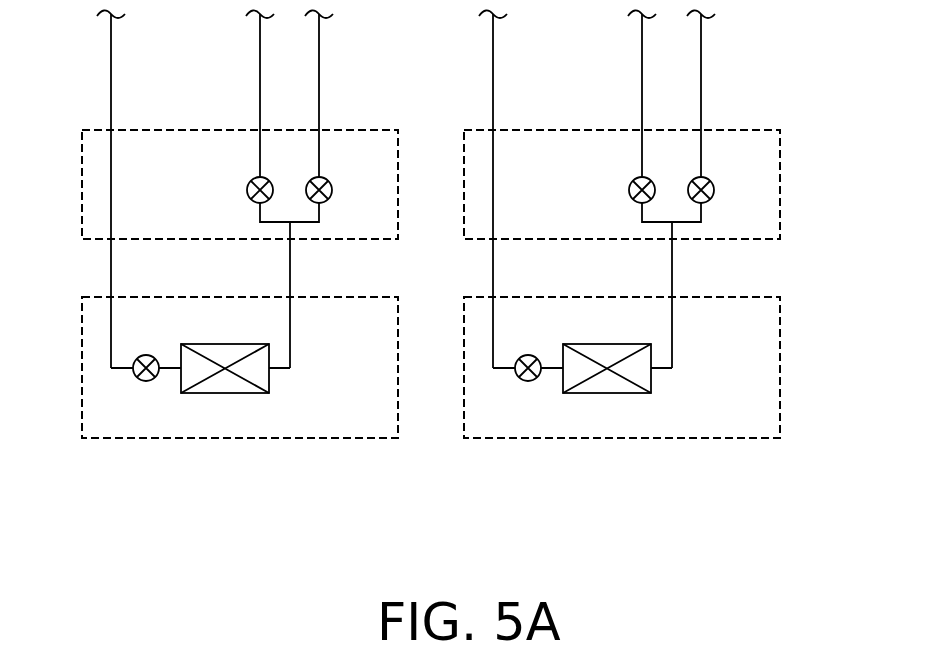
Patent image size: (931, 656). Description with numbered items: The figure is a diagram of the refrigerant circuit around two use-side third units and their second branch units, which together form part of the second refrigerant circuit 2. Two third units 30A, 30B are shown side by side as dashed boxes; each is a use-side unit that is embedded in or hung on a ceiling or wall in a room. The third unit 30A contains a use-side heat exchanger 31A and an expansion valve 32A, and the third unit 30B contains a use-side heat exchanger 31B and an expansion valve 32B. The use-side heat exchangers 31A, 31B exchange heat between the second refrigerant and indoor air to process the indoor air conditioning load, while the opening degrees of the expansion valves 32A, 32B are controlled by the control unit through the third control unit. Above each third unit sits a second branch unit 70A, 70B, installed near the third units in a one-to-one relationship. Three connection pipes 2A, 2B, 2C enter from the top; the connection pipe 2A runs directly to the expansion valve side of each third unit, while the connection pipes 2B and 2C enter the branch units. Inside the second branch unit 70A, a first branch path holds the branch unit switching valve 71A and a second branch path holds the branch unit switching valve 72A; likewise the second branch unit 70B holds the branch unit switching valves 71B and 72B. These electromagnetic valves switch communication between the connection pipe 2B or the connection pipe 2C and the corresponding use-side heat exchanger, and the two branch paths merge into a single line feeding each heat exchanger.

The second refrigerant circuit 2 is at (753, 480).
The connection pipe 2A is at (110, 78).
The connection pipe 2B is at (259, 78).
The connection pipe 2C is at (320, 78).
The third unit 30A is at (622, 440).
The third unit 30B is at (240, 440).
The use-side heat exchanger 31A is at (652, 385).
The use-side heat exchanger 31B is at (270, 385).
The expansion valve 32A is at (532, 381).
The expansion valve 32B is at (150, 381).
The second branch unit 70A is at (727, 240).
The second branch unit 70B is at (345, 240).
The branch unit switching valve 71A is at (631, 184).
The branch unit switching valve 71B is at (249, 184).
The branch unit switching valve 72A is at (732, 172).
The branch unit switching valve 72B is at (350, 172).